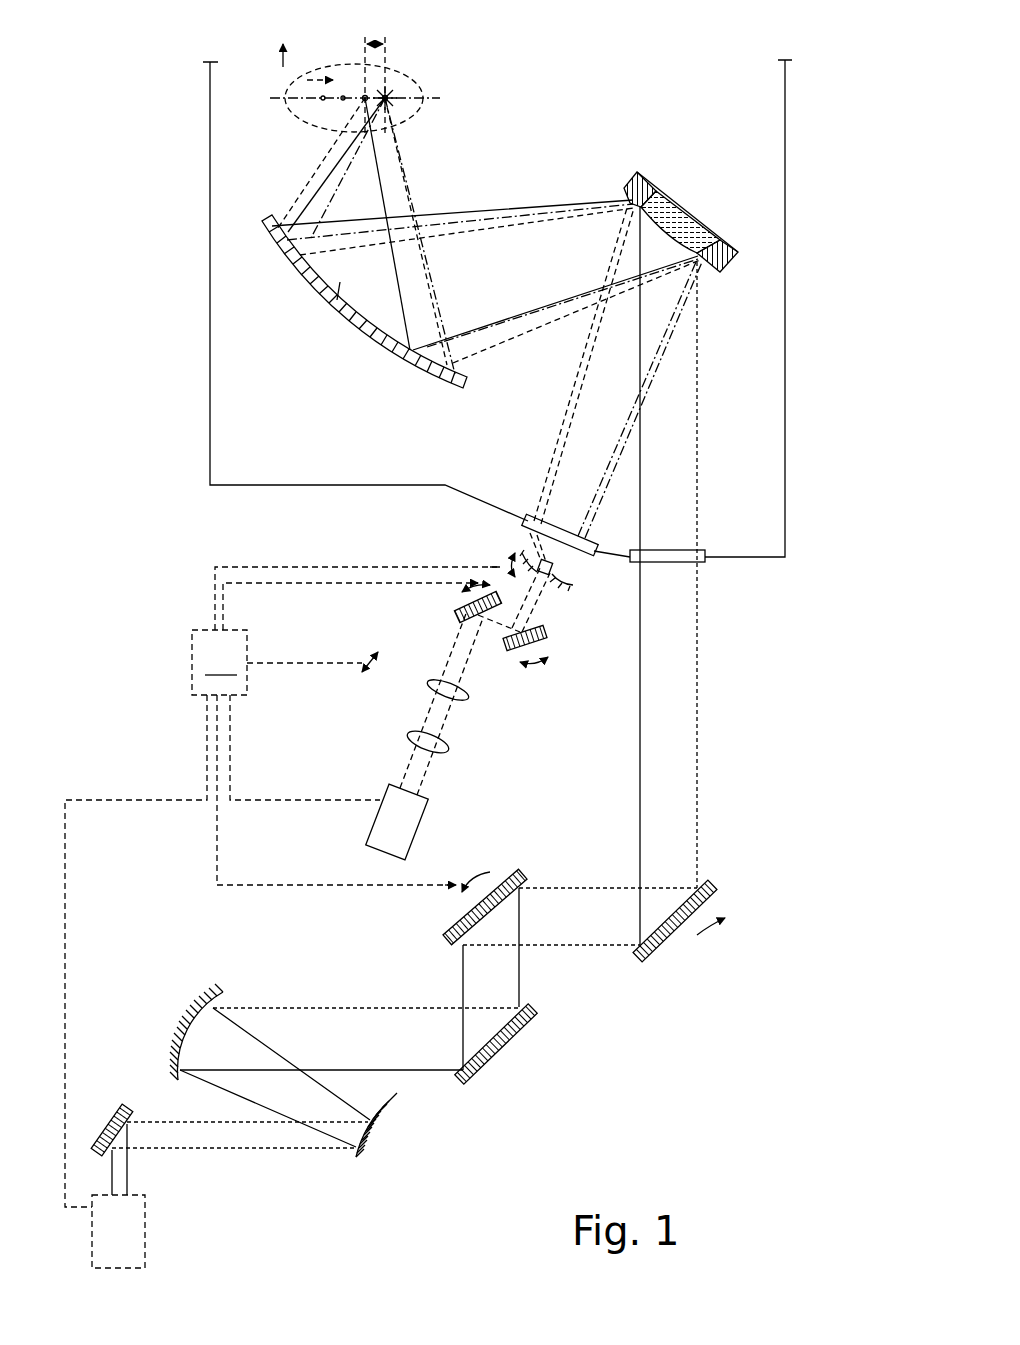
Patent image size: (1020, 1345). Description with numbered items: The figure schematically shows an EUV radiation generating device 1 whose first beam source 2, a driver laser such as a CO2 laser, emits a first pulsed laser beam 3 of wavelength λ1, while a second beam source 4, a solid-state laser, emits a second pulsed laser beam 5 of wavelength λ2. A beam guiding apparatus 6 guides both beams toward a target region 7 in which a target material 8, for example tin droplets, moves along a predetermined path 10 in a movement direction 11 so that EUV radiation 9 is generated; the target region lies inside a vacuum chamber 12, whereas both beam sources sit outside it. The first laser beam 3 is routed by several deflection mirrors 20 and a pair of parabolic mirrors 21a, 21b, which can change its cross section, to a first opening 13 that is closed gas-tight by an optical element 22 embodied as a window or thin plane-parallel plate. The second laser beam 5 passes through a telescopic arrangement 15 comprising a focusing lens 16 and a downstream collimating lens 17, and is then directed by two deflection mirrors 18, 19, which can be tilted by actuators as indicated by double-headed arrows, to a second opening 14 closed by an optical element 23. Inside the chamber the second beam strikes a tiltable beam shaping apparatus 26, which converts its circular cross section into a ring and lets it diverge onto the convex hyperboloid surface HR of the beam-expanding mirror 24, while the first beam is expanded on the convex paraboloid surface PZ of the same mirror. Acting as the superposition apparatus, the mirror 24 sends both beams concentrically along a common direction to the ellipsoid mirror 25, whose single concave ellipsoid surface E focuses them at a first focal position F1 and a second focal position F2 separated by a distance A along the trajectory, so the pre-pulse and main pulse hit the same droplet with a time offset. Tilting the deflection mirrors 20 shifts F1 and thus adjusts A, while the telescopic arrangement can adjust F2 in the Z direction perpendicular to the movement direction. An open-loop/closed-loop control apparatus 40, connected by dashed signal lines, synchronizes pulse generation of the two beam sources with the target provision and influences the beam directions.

The EUV radiation generating device 1 is at (176, 117).
The first beam source 2 is at (105, 1243).
The first laser beam 3 is at (122, 1163).
The second beam source 4 is at (376, 823).
The second laser beam 5 is at (418, 772).
The beam guiding apparatus 6 is at (424, 547).
The target region 7 is at (392, 68).
The target material 8 is at (343, 100).
The EUV radiation 9 is at (396, 90).
The predetermined path 10 is at (277, 95).
The movement direction 11 is at (307, 80).
The vacuum chamber 12 is at (210, 198).
The first opening 13 is at (711, 583).
The second opening 14 is at (504, 538).
The telescopic arrangement 15 is at (432, 700).
The focusing lens 16 is at (443, 750).
The collimating lens 17 is at (443, 681).
The deflection mirror 18 is at (458, 610).
The deflection mirror 19 is at (548, 648).
The deflection mirrors 20 is at (462, 928).
The parabolic mirror 21a is at (375, 1130).
The parabolic mirror 21b is at (180, 1030).
The optical element 22 is at (705, 560).
The optical element 23 is at (530, 518).
The beam-expanding mirror 24 is at (643, 188).
The ellipsoid mirror 25 is at (328, 352).
The beam shaping apparatus 26 is at (574, 601).
The open-loop/closed-loop control apparatus 40 is at (282, 887).
The Z-direction Z is at (270, 51).
The distance between focal positions A is at (375, 75).
The first focal position F1 is at (389, 99).
The second focal position F2 is at (365, 96).
The ellipsoid surface E is at (345, 290).
The hyperboloid surface HR is at (622, 198).
The paraboloid surface PZ is at (667, 250).